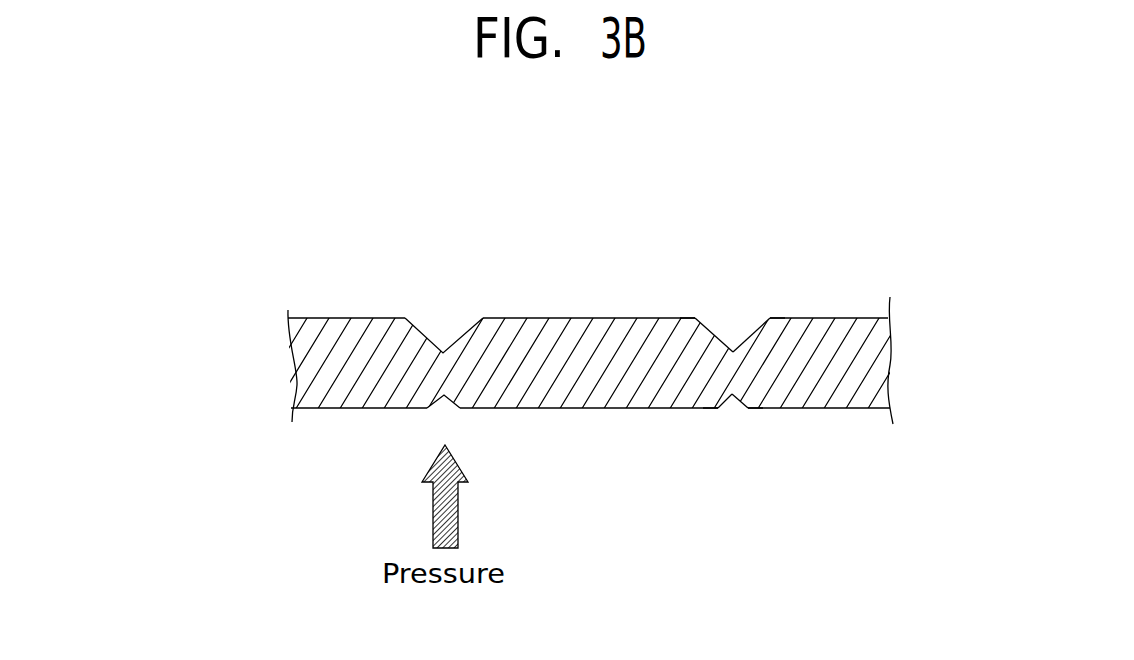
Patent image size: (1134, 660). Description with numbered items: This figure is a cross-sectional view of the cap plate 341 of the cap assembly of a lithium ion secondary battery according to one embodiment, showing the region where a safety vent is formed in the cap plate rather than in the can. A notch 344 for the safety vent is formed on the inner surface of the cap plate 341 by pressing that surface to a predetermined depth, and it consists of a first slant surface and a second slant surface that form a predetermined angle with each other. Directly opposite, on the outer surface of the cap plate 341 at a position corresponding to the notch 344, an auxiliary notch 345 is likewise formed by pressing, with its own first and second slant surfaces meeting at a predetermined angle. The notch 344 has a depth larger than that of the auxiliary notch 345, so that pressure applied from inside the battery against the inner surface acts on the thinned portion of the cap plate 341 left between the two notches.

The cap plate 341 is at (243, 205).
The notch 344 is at (817, 515).
The auxiliary notch 345 is at (788, 200).